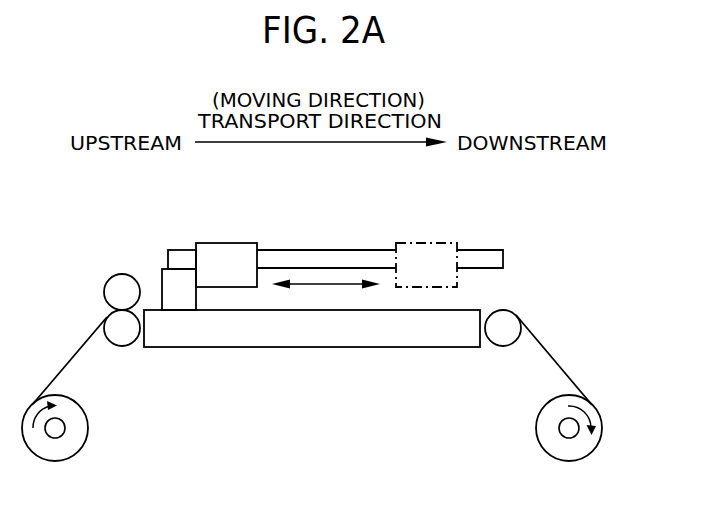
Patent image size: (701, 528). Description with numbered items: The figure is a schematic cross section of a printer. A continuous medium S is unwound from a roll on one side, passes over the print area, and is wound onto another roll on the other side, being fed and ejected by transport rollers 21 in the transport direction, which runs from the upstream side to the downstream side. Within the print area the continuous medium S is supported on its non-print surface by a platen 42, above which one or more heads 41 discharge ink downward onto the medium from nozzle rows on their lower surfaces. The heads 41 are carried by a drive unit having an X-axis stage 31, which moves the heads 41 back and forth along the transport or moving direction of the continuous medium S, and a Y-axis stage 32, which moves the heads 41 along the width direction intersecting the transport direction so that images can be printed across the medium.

The transport rollers 21 is at (121, 274).
The X-axis stage 31 is at (327, 250).
The Y-axis stage 32 is at (179, 250).
The heads 41 is at (229, 243).
The platen 42 is at (314, 347).
The continuous medium S is at (72, 358).